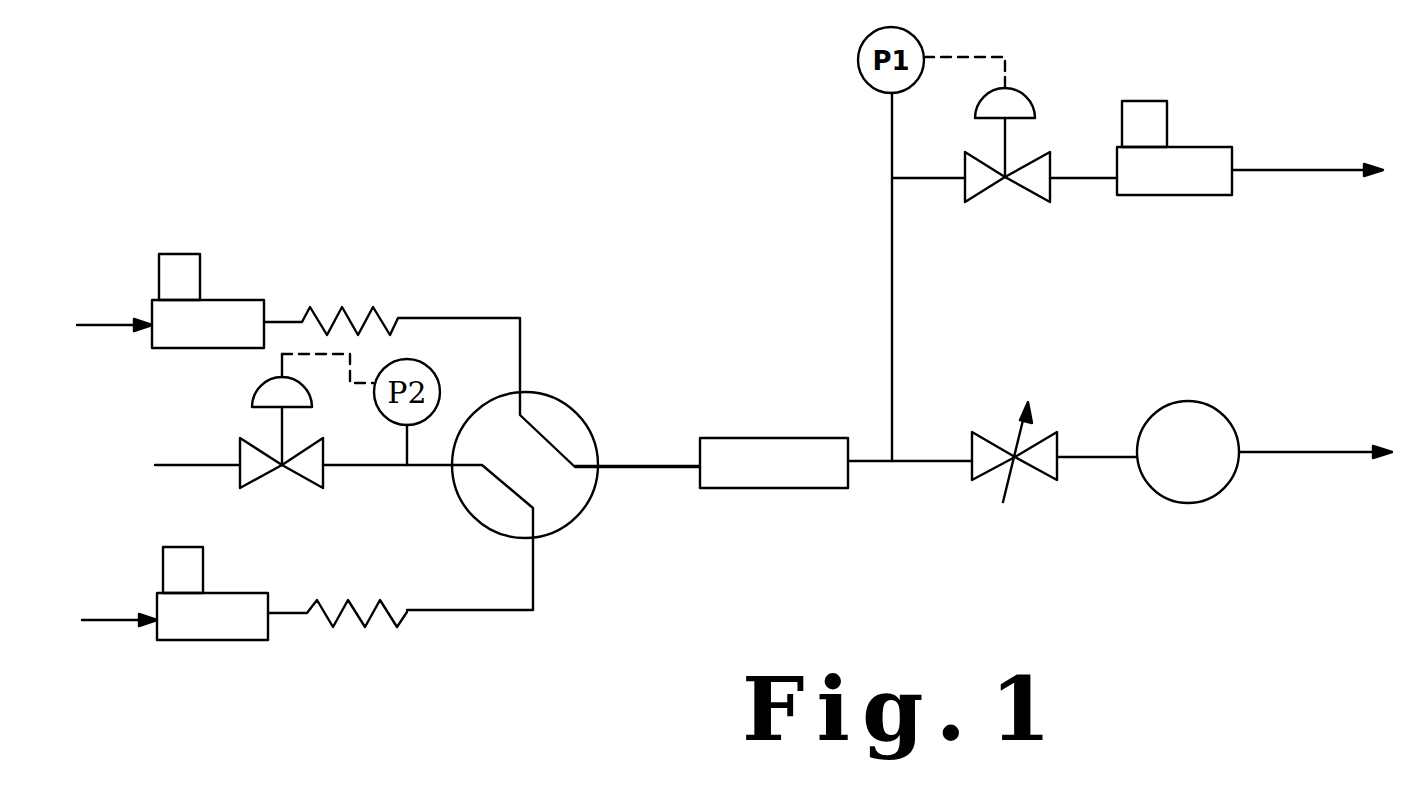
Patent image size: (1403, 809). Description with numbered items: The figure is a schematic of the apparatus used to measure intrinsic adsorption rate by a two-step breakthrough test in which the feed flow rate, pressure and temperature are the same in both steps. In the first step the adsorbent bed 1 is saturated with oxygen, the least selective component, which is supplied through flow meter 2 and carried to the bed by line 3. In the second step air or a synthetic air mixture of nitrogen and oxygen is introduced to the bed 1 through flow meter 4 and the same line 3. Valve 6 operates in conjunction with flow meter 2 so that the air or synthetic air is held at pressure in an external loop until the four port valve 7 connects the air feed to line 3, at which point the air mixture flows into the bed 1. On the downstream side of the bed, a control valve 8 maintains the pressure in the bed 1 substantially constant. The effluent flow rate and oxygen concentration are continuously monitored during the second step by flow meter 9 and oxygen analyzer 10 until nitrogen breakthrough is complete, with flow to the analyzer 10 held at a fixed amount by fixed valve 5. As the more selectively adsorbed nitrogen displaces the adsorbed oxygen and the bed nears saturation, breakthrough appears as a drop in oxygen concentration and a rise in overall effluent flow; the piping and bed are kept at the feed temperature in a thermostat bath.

The adsorbent bed 1 is at (773, 438).
The flow meter 2 is at (240, 300).
The line 3 is at (645, 465).
The flow meter 4 is at (180, 640).
The fixed valve 5 is at (1037, 463).
The valve 6 is at (260, 478).
The four port valve 7 is at (575, 517).
The control valve 8 is at (983, 55).
The flow meter 9 is at (1203, 195).
The oxygen analyzer 10 is at (1207, 503).